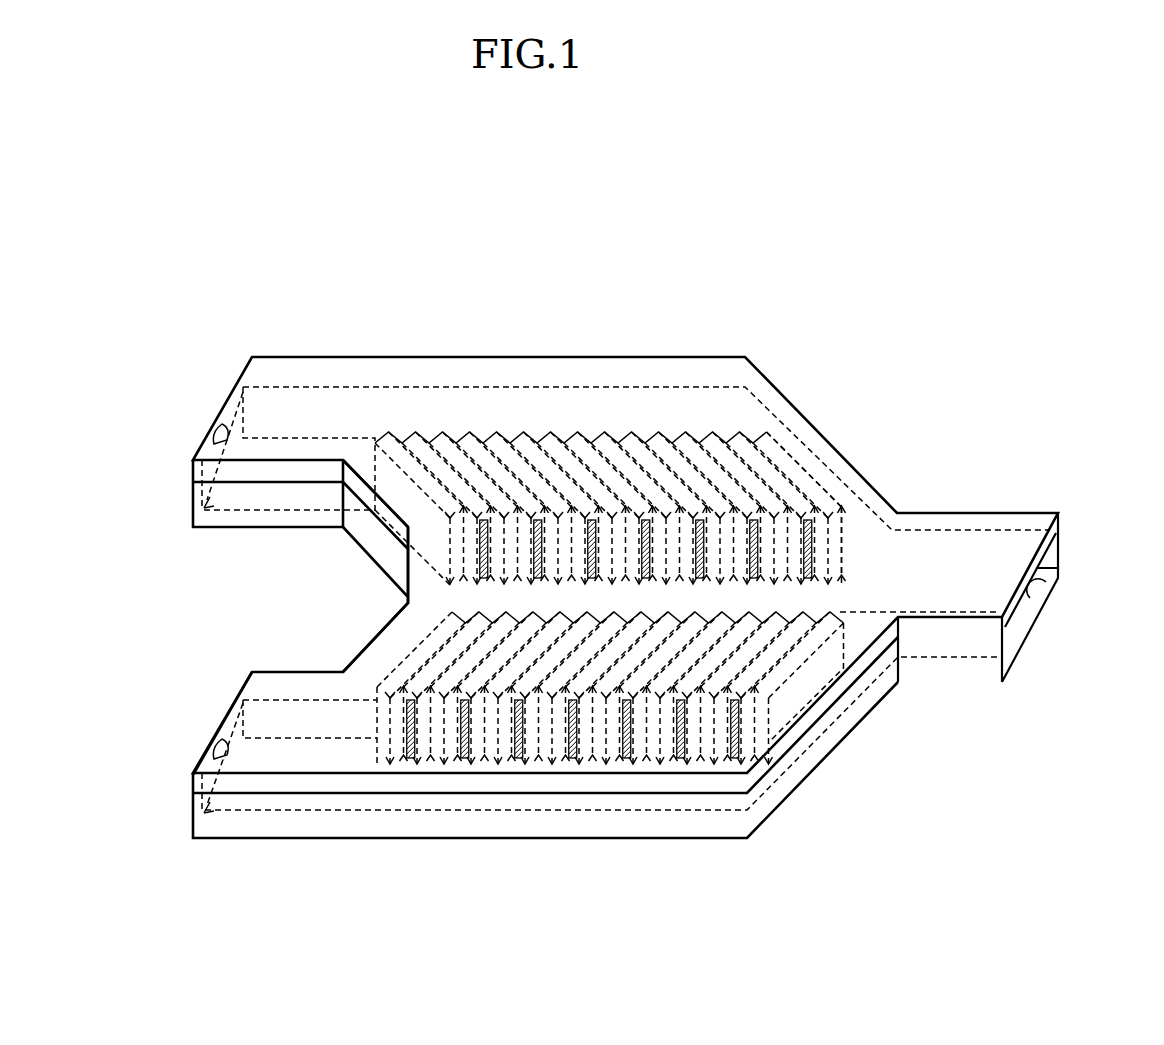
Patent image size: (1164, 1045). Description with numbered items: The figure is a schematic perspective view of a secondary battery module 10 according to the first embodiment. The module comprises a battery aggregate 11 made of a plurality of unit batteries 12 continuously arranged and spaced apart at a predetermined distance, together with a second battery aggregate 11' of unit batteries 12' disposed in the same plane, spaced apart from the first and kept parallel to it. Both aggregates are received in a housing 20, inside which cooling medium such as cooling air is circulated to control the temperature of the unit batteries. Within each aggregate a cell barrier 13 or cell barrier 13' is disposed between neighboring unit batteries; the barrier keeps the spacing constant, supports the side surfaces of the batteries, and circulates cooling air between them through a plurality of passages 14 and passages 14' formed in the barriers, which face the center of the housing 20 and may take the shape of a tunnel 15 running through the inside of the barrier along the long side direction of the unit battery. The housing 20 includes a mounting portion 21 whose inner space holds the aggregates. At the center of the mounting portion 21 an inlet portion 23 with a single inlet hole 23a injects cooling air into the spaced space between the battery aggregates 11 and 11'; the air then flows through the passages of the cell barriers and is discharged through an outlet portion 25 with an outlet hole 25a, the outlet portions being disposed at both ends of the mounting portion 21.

The secondary battery module 10 is at (760, 279).
The battery aggregate 11 is at (571, 419).
The battery aggregate 11' is at (648, 773).
The unit battery 12 is at (432, 419).
The unit battery 12' is at (441, 776).
The cell barrier 13 is at (489, 419).
The cell barrier 13' is at (510, 774).
The passage 14 is at (687, 609).
The passage 14' is at (573, 810).
The tunnel 15 is at (770, 588).
The housing 20 is at (964, 453).
The mounting portion 21 is at (370, 640).
The inlet portion 23 is at (1005, 553).
The inlet hole 23a is at (1042, 604).
The outlet portion 25 is at (290, 357).
The outlet hole 25a is at (212, 437).